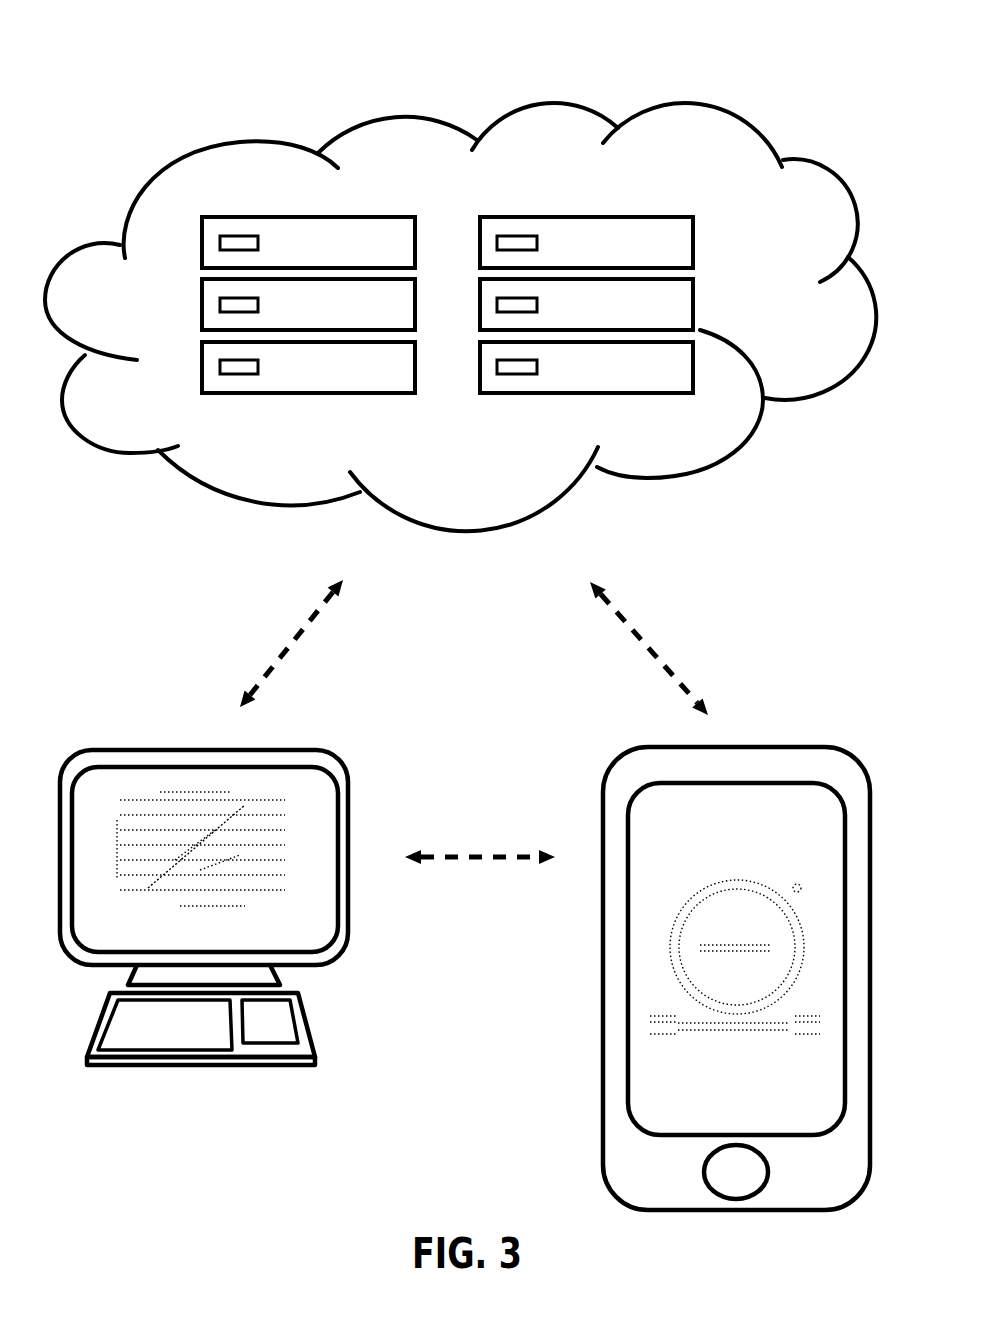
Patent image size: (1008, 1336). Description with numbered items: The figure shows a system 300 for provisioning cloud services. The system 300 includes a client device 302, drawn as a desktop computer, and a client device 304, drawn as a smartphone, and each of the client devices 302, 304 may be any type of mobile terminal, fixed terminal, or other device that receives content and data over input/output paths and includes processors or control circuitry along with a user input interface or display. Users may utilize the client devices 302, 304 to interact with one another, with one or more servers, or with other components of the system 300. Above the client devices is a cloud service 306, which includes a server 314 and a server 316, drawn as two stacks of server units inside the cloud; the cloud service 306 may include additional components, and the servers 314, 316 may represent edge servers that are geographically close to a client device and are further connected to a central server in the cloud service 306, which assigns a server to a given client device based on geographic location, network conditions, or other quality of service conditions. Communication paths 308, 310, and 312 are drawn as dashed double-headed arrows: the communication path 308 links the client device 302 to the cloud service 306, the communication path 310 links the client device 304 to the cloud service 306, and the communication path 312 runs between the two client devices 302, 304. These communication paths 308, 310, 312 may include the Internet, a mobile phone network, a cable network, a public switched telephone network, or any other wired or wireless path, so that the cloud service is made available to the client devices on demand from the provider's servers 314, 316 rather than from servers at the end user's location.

The system 300 is at (493, 22).
The client device 302 is at (182, 733).
The client device 304 is at (765, 741).
The cloud service 306 is at (578, 95).
The communication path 308 is at (263, 613).
The communication path 310 is at (660, 596).
The communication path 312 is at (462, 835).
The server 314 is at (348, 213).
The server 316 is at (628, 213).